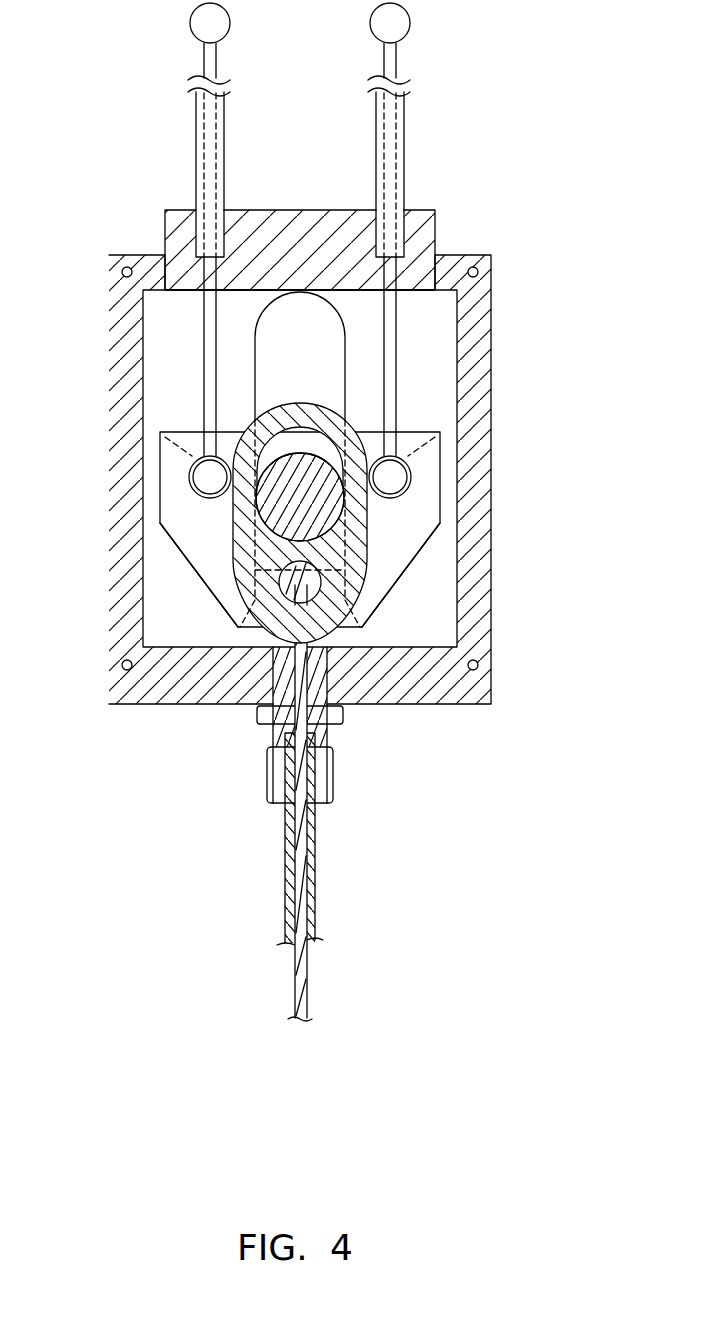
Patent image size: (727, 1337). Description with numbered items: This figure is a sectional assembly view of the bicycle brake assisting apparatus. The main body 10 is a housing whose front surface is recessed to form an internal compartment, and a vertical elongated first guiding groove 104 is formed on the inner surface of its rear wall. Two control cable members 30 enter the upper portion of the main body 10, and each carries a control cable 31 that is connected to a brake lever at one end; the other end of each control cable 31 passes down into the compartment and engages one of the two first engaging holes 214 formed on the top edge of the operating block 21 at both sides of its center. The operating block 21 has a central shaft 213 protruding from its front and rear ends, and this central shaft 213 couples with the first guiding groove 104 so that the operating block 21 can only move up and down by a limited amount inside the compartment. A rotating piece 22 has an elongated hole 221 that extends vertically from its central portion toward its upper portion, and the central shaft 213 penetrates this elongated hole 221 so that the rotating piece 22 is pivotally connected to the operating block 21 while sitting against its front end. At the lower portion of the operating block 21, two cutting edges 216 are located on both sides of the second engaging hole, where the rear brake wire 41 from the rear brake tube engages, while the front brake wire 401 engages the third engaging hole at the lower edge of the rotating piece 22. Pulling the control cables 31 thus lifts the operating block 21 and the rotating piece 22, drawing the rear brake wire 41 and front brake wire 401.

The main body 10 is at (506, 663).
The first guiding groove 104 is at (291, 295).
The control cable members 30 is at (183, 131).
The control cable 31 is at (200, 275).
The operating block 21 is at (417, 430).
The cutting edges 216 is at (424, 546).
The first engaging holes 214 is at (190, 468).
The elongated hole 221 is at (247, 430).
The rotating piece 22 is at (297, 412).
The central shaft 213 is at (303, 493).
The front brake wire 401 is at (270, 626).
The rear brake wire 41 is at (348, 627).